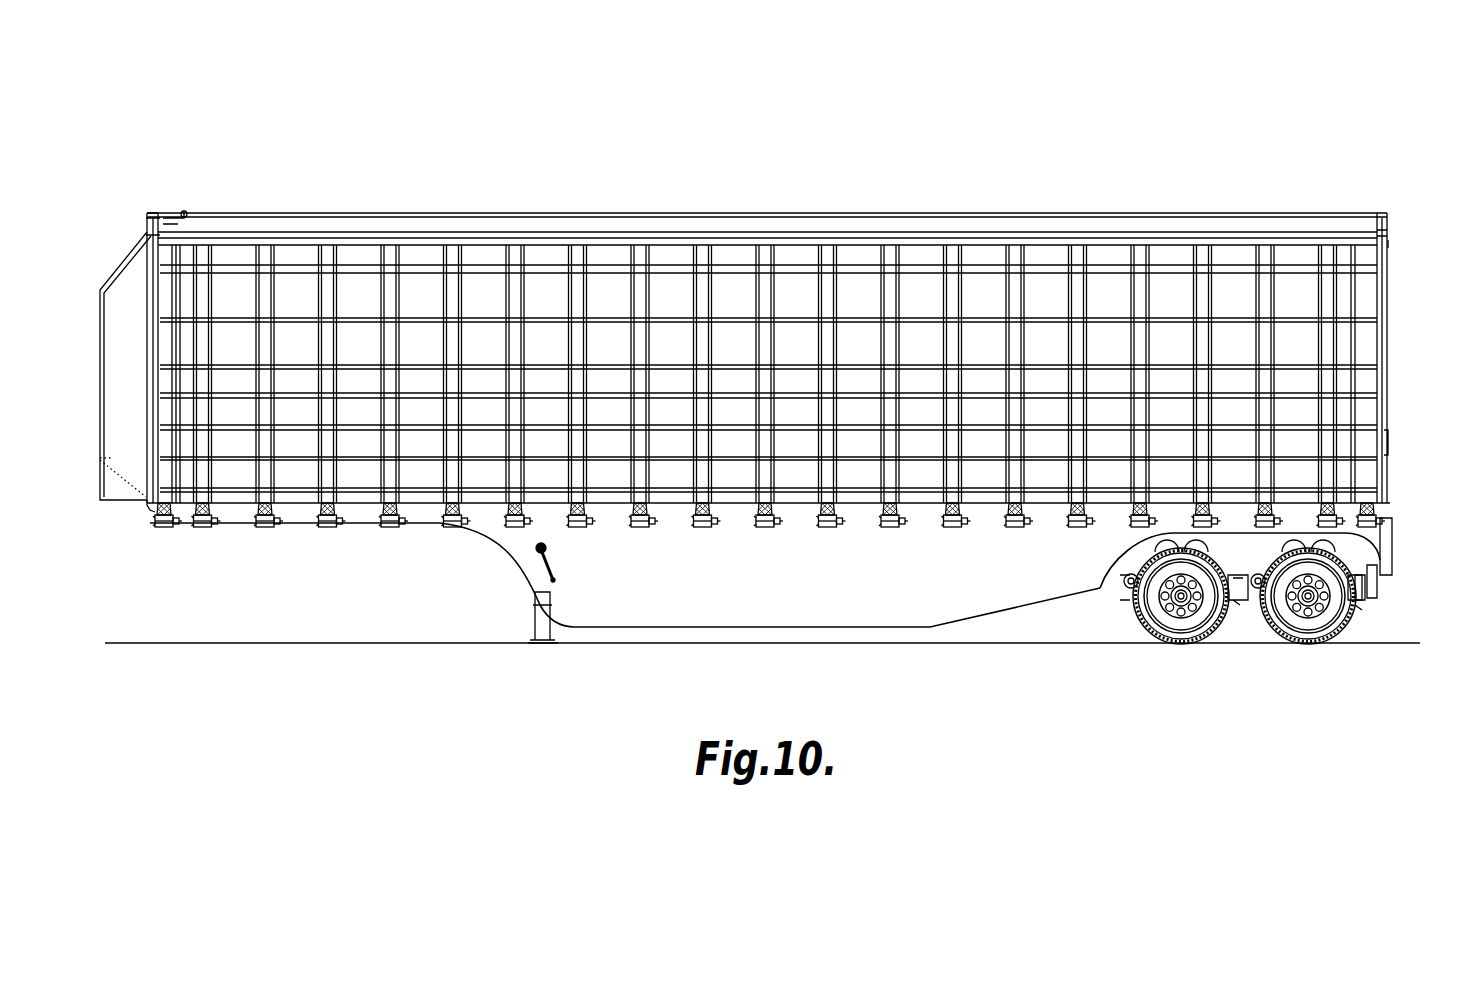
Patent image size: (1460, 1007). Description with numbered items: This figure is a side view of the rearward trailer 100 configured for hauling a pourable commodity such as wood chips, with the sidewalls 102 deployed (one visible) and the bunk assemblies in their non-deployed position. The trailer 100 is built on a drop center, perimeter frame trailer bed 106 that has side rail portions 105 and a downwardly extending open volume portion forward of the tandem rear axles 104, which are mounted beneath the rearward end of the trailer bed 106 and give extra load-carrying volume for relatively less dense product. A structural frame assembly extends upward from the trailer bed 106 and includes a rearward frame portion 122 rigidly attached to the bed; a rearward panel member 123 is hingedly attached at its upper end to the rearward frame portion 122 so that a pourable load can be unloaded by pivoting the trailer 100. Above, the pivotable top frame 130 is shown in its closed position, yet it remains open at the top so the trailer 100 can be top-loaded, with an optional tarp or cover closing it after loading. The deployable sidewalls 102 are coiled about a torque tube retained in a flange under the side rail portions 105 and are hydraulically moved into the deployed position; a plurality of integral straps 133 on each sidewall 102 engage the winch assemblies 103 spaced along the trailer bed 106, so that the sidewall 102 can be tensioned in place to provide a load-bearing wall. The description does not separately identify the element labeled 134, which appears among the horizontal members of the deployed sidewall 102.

The trailer 100 is at (838, 146).
The sidewalls 102 is at (768, 329).
The winch assemblies 103 is at (580, 530).
The rear axles 104 is at (1213, 641).
The side rail portions 105 is at (297, 515).
The trailer bed 106 is at (1018, 613).
The rearward frame portion 122 is at (1384, 218).
The rearward panel member 123 is at (1385, 258).
The top frame 130 is at (624, 213).
The straps 133 is at (258, 262).
The horizontal slats 134 is at (1297, 258).